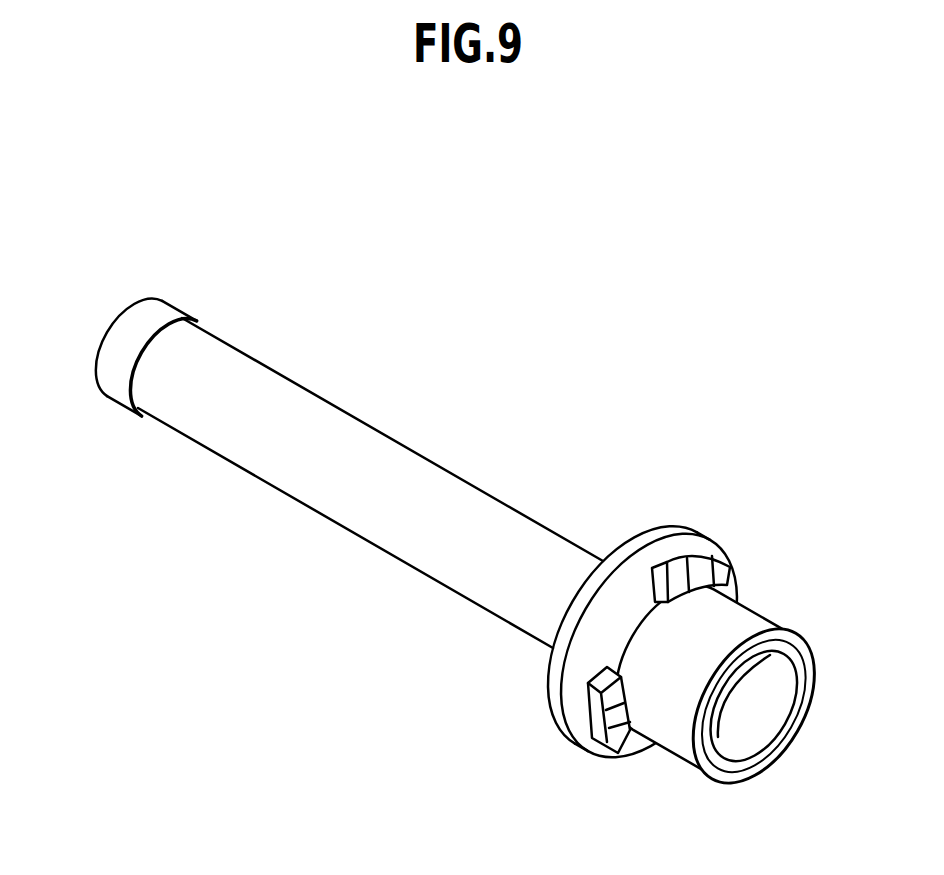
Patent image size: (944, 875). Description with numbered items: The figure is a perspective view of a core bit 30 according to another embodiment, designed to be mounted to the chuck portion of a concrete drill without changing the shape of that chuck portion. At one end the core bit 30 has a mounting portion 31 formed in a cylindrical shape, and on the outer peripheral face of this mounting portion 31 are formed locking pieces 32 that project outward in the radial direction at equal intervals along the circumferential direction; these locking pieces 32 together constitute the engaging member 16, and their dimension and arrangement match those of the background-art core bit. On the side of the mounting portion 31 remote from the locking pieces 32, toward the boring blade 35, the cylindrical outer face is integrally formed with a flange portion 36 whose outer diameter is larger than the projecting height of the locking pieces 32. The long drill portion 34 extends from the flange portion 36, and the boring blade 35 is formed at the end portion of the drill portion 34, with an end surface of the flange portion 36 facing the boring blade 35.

The core bit 30 is at (455, 393).
The mounting portion 31 is at (700, 768).
The locking piece 32 is at (688, 552).
The engaging member 16 is at (645, 625).
The drill portion 34 is at (327, 517).
The boring blade 35 is at (117, 395).
The flange portion 36 is at (635, 533).